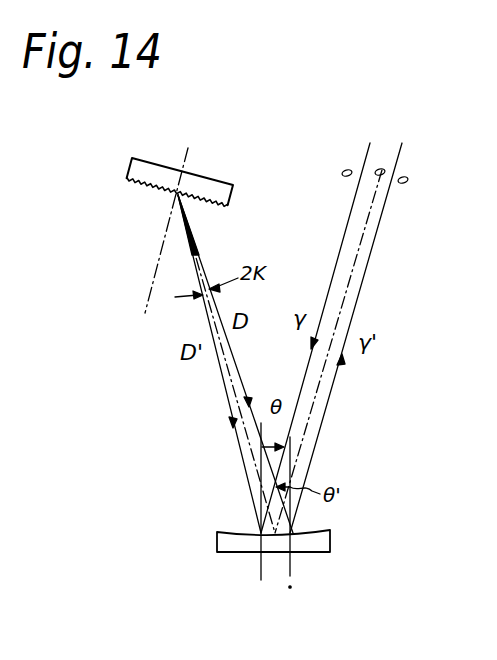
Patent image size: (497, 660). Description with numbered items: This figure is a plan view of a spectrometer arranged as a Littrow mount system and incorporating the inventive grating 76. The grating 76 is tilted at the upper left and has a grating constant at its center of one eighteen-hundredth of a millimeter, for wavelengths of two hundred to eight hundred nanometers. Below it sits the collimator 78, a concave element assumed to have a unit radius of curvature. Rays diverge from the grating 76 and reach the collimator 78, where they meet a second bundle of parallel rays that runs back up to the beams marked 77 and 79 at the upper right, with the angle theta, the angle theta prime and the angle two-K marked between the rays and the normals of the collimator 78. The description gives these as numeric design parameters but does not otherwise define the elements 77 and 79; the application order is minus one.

The grating 76 is at (212, 175).
The light beam 77 is at (343, 172).
The collimator 78 is at (318, 553).
The light beam 79 is at (403, 185).